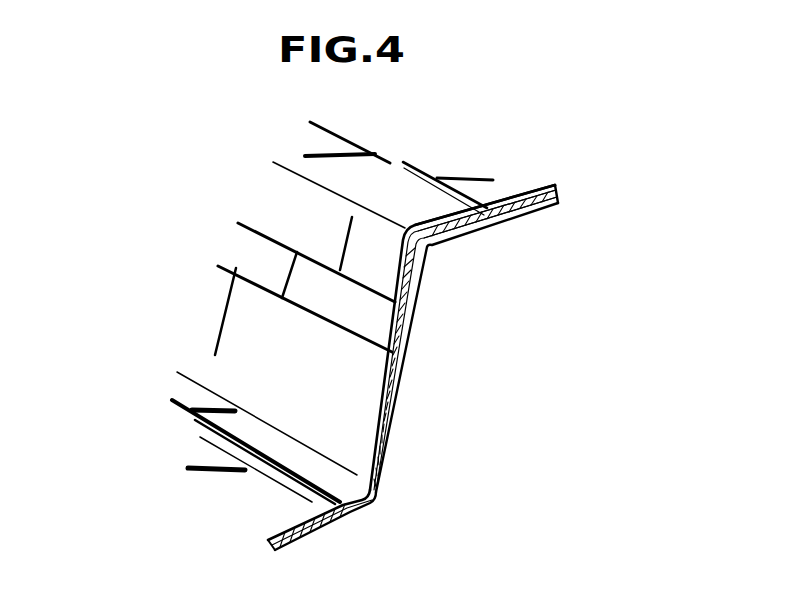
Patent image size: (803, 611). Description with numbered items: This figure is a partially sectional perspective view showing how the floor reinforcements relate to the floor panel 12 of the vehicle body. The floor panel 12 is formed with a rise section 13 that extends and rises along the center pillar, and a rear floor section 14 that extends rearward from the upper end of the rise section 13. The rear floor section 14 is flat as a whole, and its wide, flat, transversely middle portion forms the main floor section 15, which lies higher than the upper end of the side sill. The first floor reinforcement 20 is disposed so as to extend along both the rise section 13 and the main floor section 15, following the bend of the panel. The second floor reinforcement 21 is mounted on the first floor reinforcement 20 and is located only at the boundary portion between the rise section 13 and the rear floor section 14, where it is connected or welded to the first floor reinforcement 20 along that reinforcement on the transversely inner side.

The floor panel 12 is at (530, 215).
The rise section 13 is at (357, 425).
The rear floor section 14 is at (490, 217).
The main floor section 15 is at (503, 193).
The first floor reinforcement 20 is at (273, 268).
The second floor reinforcement 21 is at (377, 188).